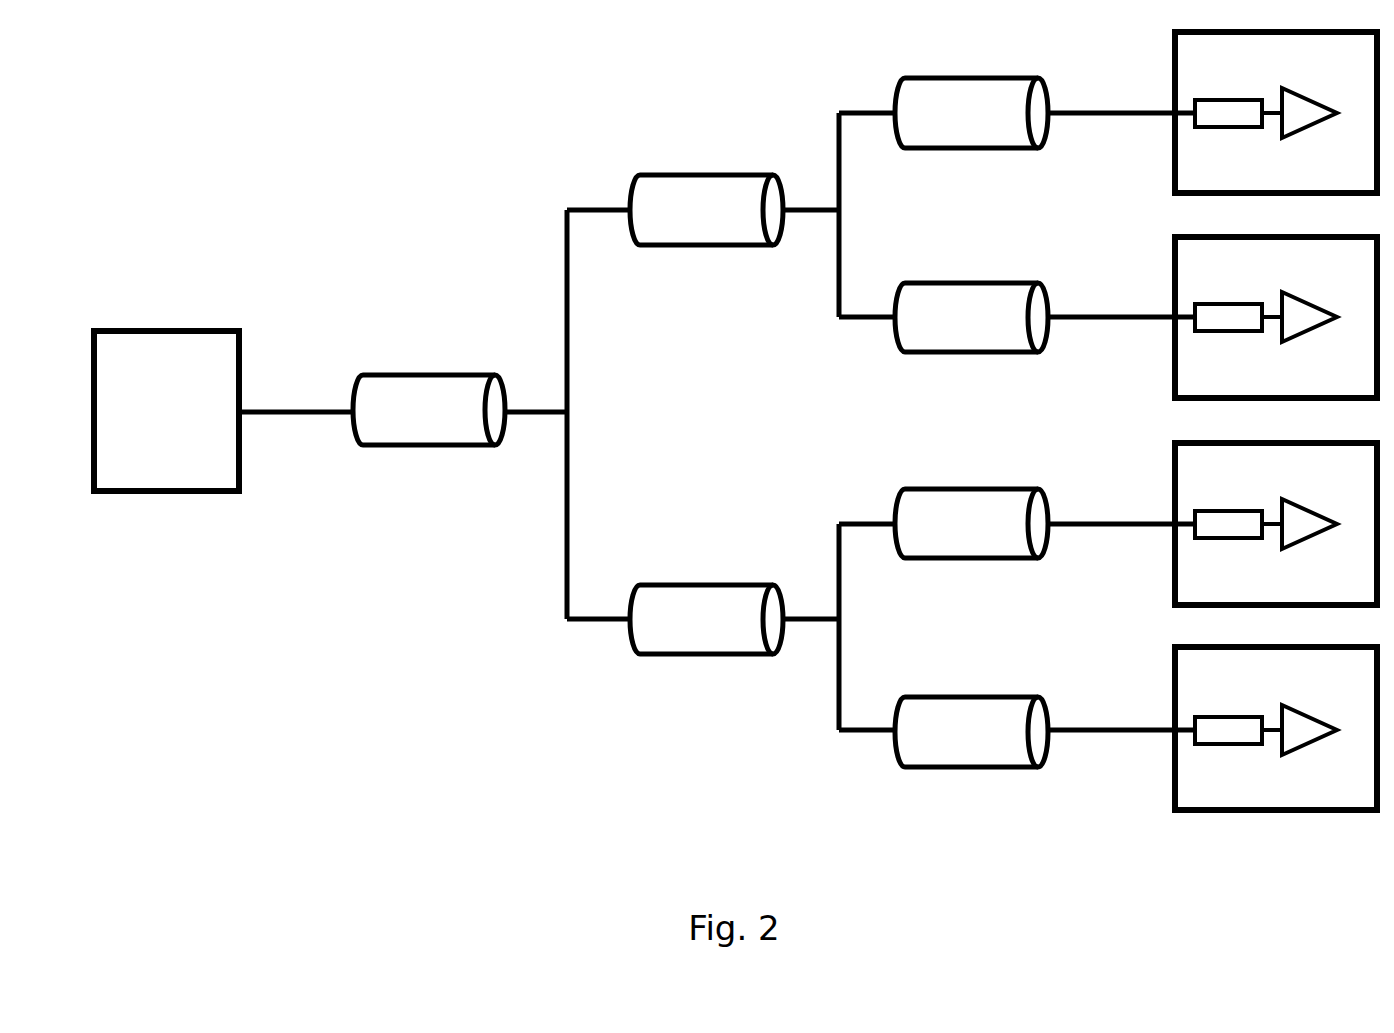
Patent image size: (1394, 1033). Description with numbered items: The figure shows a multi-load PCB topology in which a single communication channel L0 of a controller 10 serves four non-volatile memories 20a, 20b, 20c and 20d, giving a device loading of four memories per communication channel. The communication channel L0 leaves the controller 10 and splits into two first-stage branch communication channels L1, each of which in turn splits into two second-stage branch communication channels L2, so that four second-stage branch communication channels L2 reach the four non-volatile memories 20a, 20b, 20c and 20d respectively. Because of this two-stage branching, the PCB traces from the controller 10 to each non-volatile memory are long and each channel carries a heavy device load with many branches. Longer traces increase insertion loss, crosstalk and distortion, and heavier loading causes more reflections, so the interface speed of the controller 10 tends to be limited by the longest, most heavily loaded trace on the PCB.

The controller 10 is at (166, 411).
The non-volatile memory 20a is at (1276, 112).
The non-volatile memory 20b is at (1276, 317).
The non-volatile memory 20c is at (1276, 524).
The non-volatile memory 20d is at (1276, 728).
The communication channel L0 is at (429, 410).
The first-stage branch communication channel L1 is at (706, 414).
The second-stage branch communication channel L2 is at (971, 422).